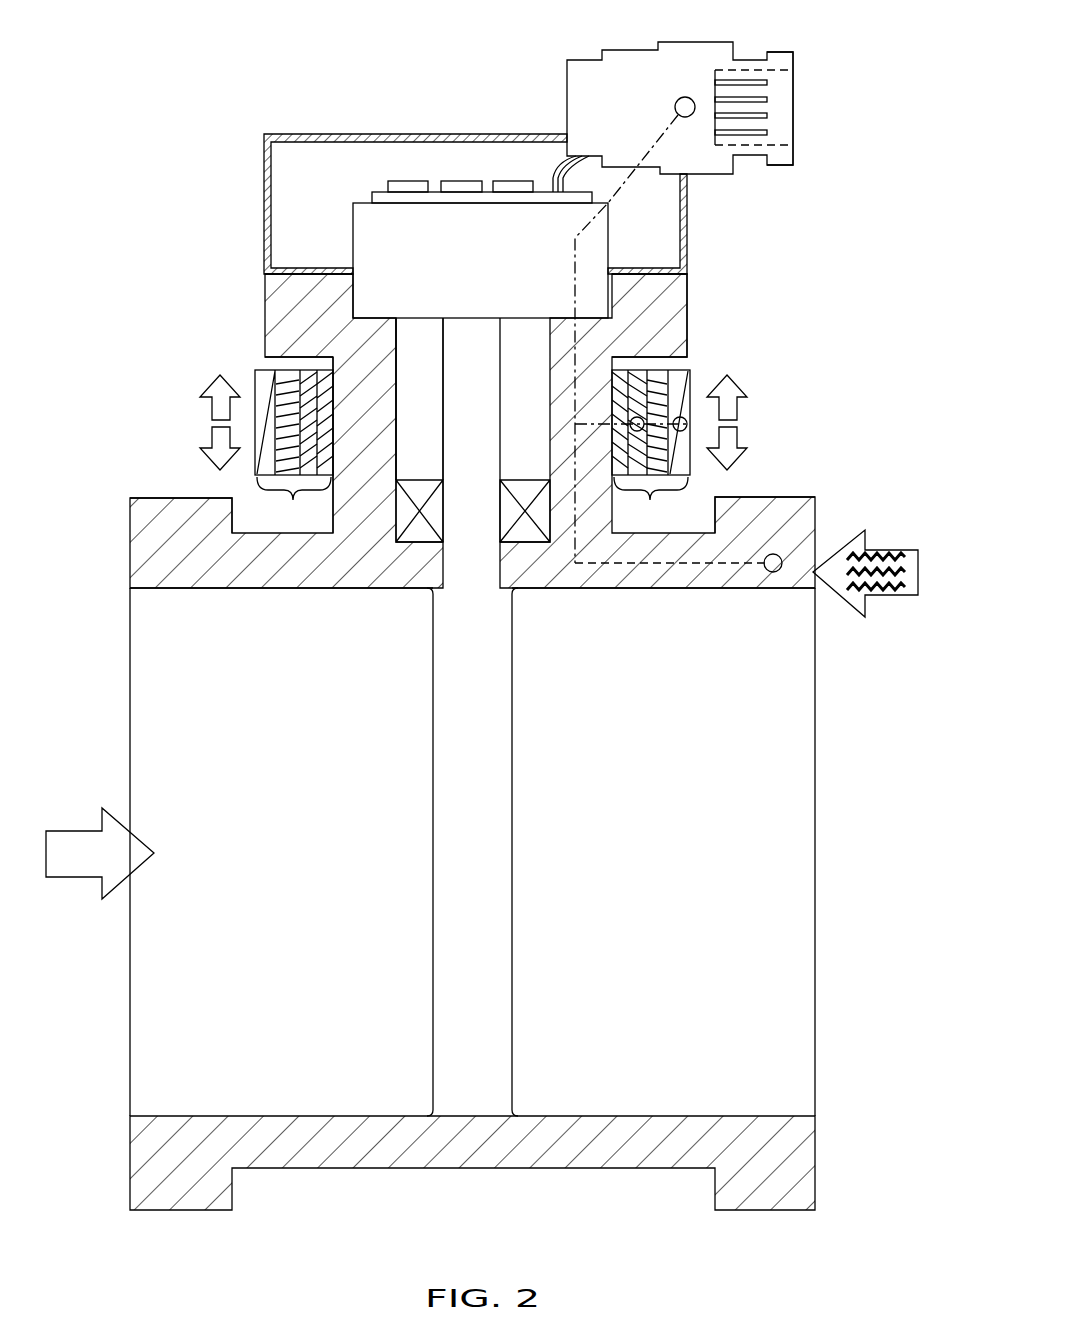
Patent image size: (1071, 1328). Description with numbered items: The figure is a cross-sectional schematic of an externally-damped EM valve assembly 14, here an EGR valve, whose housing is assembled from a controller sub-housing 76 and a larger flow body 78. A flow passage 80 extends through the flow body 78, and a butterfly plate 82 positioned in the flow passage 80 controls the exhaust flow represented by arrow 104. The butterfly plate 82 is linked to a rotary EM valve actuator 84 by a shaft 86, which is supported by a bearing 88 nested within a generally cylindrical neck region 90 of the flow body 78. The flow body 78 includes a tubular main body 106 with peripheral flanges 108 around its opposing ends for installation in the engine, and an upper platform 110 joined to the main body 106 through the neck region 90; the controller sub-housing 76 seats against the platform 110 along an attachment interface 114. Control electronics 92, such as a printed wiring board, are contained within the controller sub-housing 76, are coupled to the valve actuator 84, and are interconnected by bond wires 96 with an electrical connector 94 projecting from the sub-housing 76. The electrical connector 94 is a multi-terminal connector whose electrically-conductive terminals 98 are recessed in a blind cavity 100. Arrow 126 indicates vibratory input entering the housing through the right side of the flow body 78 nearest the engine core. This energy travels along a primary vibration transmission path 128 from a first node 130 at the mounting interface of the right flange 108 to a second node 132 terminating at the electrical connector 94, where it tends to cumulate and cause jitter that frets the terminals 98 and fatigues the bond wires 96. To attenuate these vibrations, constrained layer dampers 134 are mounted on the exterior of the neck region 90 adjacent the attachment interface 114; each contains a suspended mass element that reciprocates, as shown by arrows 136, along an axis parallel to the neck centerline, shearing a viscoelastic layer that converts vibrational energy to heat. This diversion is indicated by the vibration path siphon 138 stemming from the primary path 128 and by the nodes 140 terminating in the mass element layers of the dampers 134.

The externally-damped EM valve assembly 14 is at (170, 132).
The controller sub-housing 76 is at (312, 136).
The flow body 78 is at (128, 496).
The flow passage 80 is at (296, 853).
The butterfly plate 82 is at (500, 846).
The EM valve actuator 84 is at (497, 255).
The shaft 86 is at (450, 427).
The bearing 88 is at (527, 492).
The neck region 90 is at (378, 455).
The control electronics 92 is at (385, 192).
The electrical connector 94 is at (636, 46).
The bond wires 96 is at (556, 172).
The electrically-conductive terminals 98 is at (742, 74).
The blind cavity 100 is at (796, 117).
The arrow 104 is at (73, 831).
The main body 106 is at (290, 582).
The peripheral flanges 108 is at (157, 503).
The platform 110 is at (678, 313).
The attachment interface 114 is at (288, 303).
The arrow 126 is at (900, 596).
The primary vibration transmission path 128 is at (663, 572).
The first node 130 is at (780, 573).
The second node 132 is at (676, 101).
The constrained layer damper 134 is at (472, 452).
The arrows 136 is at (200, 411).
The vibration path siphon 138 is at (600, 424).
The nodes 140 is at (684, 417).